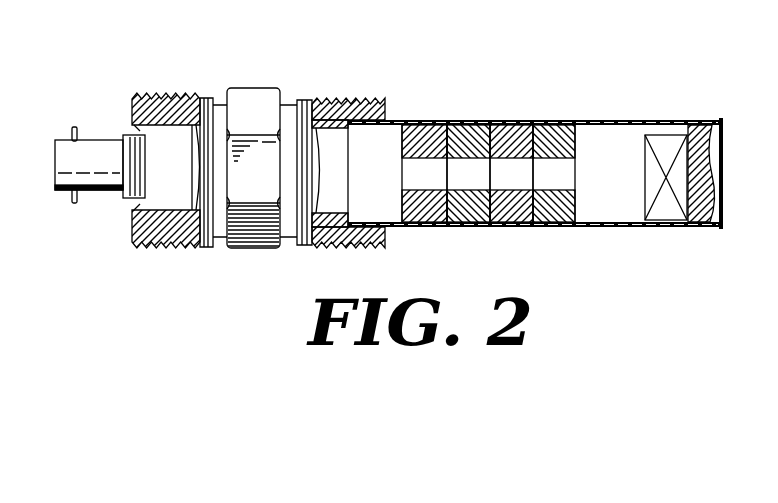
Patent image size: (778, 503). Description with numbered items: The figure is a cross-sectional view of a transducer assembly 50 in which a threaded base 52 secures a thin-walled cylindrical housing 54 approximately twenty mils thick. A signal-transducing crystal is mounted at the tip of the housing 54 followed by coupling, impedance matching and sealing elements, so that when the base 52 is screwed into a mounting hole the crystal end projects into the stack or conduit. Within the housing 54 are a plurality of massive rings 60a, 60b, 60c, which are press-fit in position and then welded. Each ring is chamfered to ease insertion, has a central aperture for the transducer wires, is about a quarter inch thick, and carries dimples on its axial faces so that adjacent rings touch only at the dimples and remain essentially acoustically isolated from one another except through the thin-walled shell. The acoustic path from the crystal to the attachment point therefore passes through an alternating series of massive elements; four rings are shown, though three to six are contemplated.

The transducer assembly 50 is at (196, 60).
The threaded base 52 is at (243, 243).
The thin-walled cylindrical housing 54 is at (603, 120).
The massive ring 60a is at (553, 120).
The massive ring 60b is at (512, 120).
The massive ring 60c is at (470, 120).